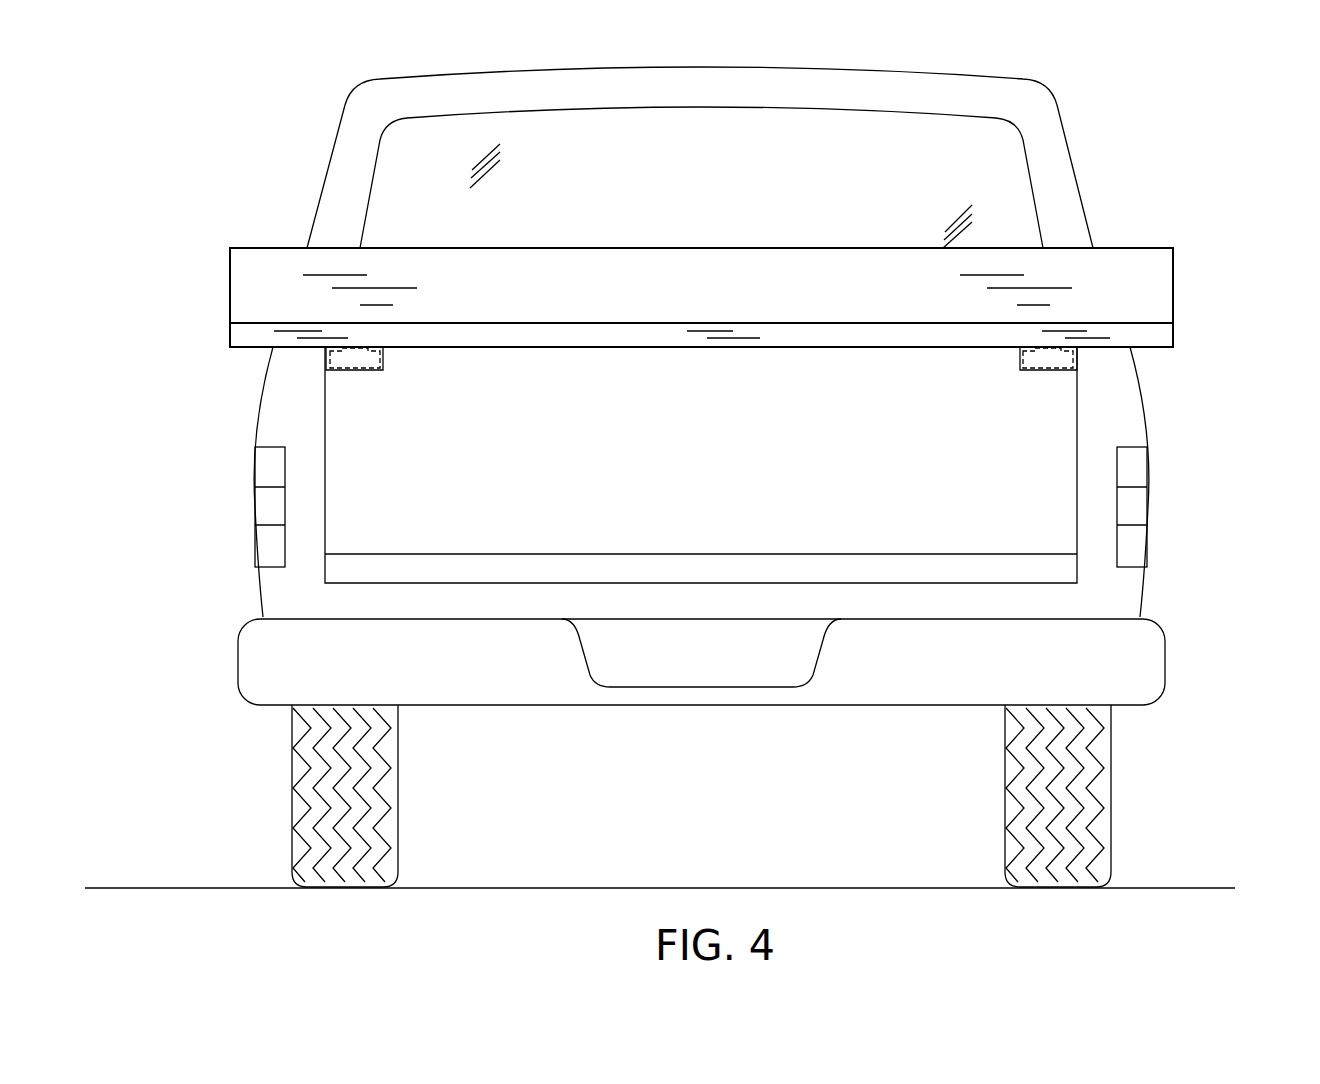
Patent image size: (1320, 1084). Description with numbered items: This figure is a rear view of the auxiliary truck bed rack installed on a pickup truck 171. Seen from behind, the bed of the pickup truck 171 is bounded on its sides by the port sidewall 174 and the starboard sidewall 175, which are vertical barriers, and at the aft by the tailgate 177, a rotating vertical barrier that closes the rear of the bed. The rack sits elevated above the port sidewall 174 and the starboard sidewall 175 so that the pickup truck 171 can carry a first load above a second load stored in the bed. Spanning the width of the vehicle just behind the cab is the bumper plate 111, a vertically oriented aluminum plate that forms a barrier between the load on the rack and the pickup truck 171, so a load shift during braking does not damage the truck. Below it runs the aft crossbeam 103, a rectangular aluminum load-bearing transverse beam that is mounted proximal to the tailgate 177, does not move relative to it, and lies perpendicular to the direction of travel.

The pickup truck 171 is at (978, 77).
The bumper plate 111 is at (1150, 288).
The aft crossbeam 103 is at (1157, 337).
The port sidewall 174 is at (280, 420).
The starboard sidewall 175 is at (1127, 425).
The tailgate 177 is at (995, 506).